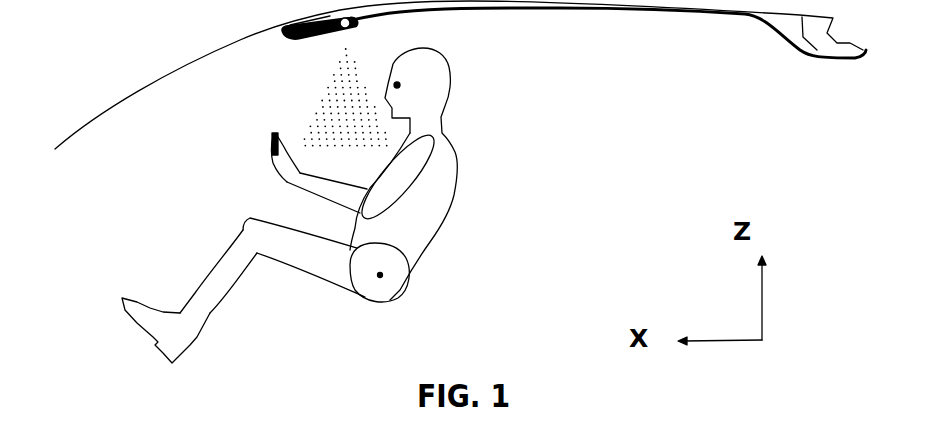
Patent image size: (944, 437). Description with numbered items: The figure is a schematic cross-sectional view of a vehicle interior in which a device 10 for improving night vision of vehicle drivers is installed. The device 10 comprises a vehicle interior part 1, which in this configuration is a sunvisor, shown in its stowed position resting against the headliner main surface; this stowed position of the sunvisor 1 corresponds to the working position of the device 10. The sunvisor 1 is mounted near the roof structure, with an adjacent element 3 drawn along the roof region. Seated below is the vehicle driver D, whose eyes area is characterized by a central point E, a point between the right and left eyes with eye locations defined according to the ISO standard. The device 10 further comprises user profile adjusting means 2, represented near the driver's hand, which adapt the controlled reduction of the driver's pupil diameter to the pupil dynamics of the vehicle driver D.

The vehicle interior part 1 is at (302, 47).
The user profile adjusting means 2 is at (272, 137).
The headliner 3 is at (603, 11).
The device for improving night vision of vehicle drivers 10 is at (197, 132).
The central point E is at (394, 81).
The vehicle driver D is at (485, 202).